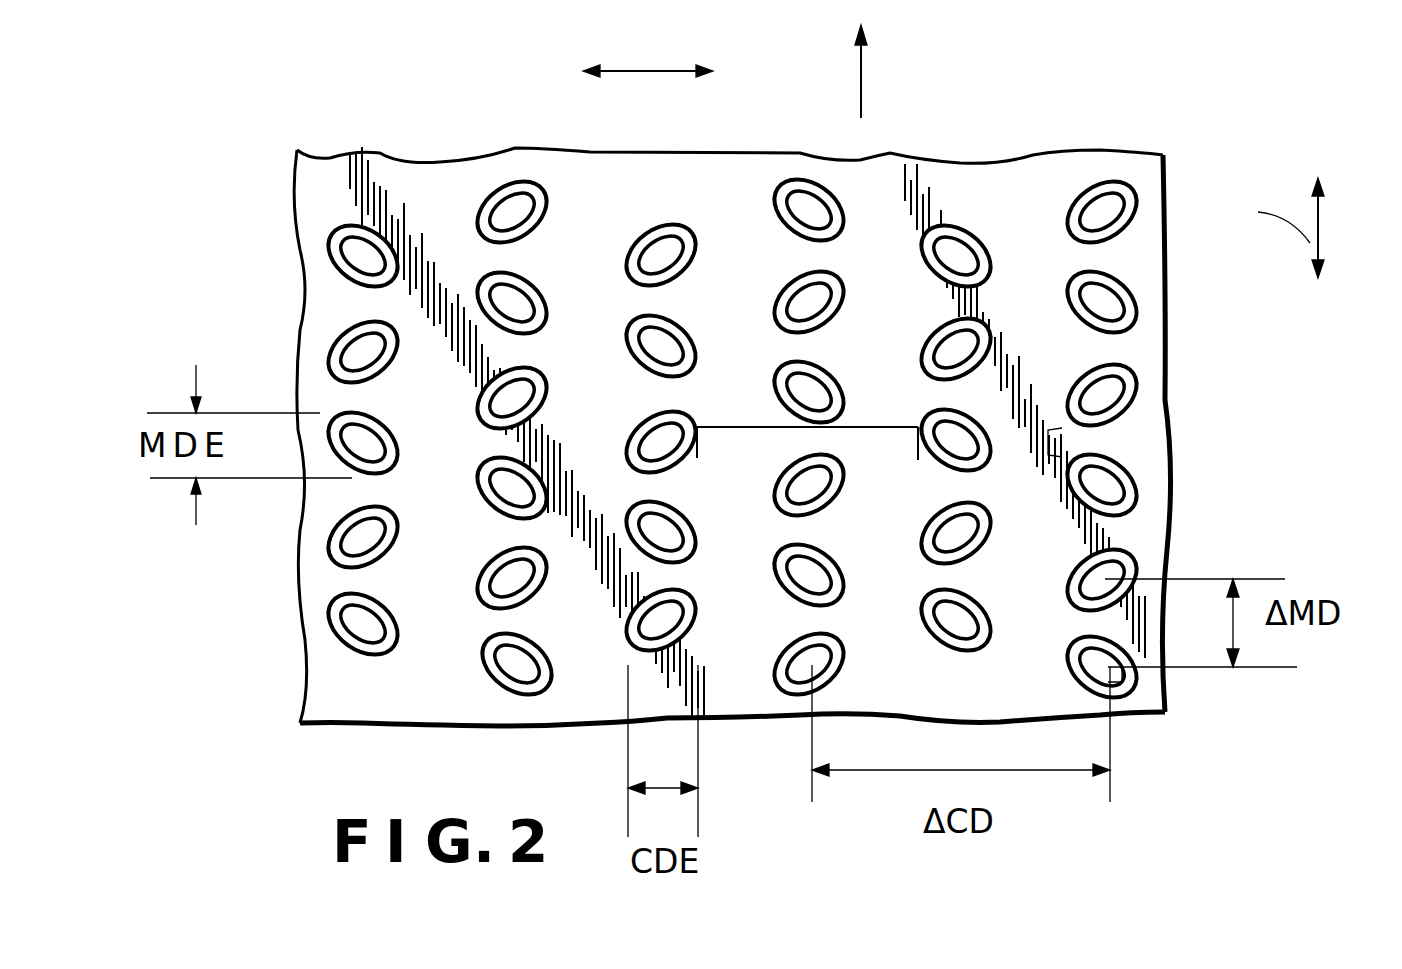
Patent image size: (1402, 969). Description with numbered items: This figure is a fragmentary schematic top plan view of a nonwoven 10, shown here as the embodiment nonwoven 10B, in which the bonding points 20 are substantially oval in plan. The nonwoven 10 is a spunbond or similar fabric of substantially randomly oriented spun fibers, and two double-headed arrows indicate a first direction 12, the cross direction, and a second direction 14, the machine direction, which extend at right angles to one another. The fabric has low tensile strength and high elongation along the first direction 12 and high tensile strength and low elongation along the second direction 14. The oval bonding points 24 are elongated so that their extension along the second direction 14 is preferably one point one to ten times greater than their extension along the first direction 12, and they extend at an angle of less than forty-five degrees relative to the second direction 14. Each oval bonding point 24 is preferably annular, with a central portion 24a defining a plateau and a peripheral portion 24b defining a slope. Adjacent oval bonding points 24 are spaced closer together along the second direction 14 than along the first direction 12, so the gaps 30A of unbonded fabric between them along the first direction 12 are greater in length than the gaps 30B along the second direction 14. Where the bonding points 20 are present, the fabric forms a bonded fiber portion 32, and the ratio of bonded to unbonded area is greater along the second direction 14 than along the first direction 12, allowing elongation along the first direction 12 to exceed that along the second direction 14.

The nonwoven 10 is at (394, 140).
The nonwoven 10B is at (288, 152).
The first direction 12 is at (654, 71).
The second direction 14 is at (1318, 222).
The bonding points 20 is at (507, 660).
The oval bonding points 24 is at (797, 210).
The central portion 24a is at (640, 250).
The peripheral portion 24b is at (658, 252).
The gaps 30A is at (880, 427).
The gaps 30B is at (1068, 475).
The bonded fiber portion 32 is at (1108, 218).